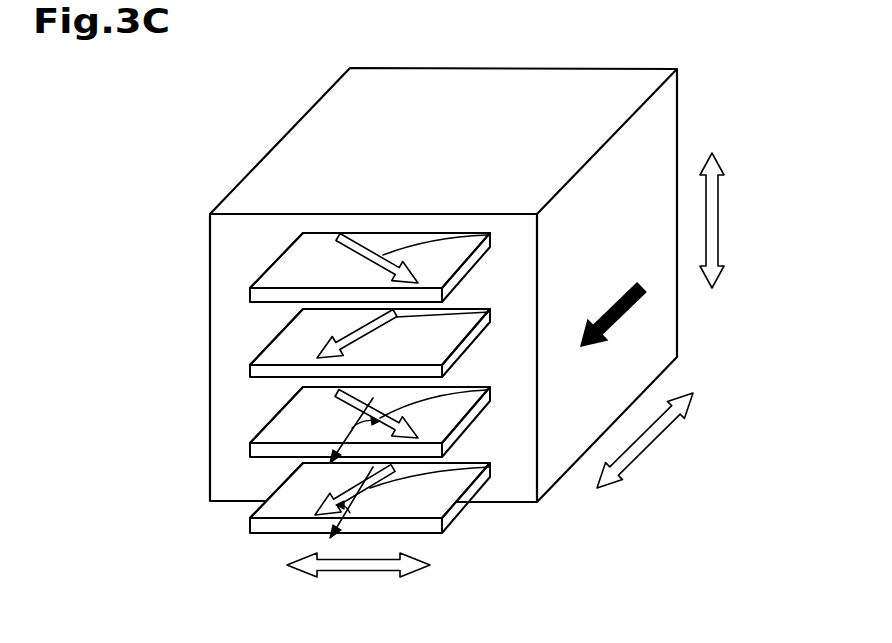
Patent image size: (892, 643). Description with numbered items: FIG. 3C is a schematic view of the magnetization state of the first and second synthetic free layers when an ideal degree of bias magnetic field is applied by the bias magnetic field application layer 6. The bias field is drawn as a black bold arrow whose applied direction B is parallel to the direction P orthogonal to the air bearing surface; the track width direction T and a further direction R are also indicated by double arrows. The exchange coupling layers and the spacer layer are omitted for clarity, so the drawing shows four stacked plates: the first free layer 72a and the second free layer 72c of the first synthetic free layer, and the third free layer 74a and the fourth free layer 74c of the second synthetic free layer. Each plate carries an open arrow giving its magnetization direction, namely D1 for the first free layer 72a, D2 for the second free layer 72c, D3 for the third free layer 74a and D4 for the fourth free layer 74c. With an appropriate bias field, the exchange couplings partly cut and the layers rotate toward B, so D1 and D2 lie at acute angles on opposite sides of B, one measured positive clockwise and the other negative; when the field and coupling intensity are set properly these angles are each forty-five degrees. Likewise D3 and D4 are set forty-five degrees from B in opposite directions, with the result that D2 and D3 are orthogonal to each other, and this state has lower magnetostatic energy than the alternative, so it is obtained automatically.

The bias magnetic field application layer 6 is at (670, 109).
The fourth free layer 74c is at (276, 262).
The third free layer 74a is at (275, 340).
The second free layer 72c is at (276, 415).
The first free layer 72a is at (277, 490).
The magnetization direction of the fourth free layer D4 is at (490, 238).
The magnetization direction of the third free layer D3 is at (490, 314).
The magnetization direction of the second free layer D2 is at (490, 392).
The magnetization direction of the first free layer D1 is at (490, 468).
The applied direction of the bias magnetic field B is at (472, 413).
The direction R is at (718, 215).
The direction orthogonal to the ABS P is at (648, 440).
The track width direction T is at (357, 572).